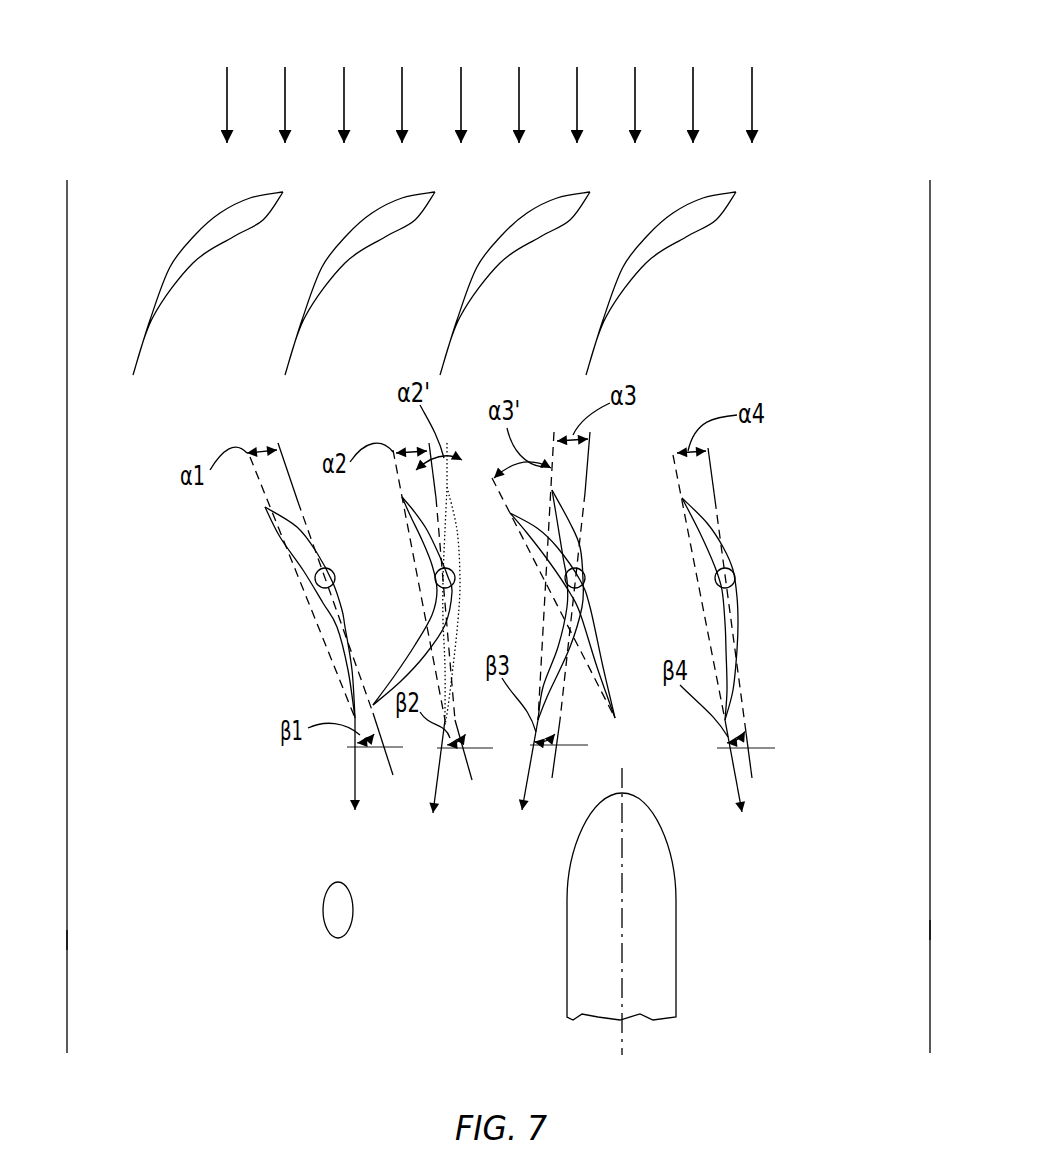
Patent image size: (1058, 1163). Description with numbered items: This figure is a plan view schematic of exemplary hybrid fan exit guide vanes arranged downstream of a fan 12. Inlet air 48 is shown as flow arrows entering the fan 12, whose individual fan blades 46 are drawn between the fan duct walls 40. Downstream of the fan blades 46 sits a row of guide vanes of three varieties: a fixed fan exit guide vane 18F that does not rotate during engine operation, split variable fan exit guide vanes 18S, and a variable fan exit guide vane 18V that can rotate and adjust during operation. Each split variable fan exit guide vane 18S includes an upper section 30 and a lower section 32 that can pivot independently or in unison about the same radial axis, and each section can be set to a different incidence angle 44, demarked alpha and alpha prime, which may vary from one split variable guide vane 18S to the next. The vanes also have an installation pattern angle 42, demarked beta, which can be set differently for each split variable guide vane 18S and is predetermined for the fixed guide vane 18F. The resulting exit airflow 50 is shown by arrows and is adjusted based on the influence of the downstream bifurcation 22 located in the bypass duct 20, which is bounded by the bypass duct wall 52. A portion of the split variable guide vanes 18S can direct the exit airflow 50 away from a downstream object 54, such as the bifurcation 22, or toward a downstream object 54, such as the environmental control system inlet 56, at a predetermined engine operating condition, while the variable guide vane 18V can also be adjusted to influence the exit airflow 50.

The fan 12 is at (737, 233).
The fixed fan exit guide vane 18F is at (345, 606).
The split variable fan exit guide vane 18S is at (460, 610).
The variable fan exit guide vane 18V is at (740, 602).
The bypass duct 20 is at (403, 993).
The upper bifurcation 22 is at (565, 963).
The upper section 30 is at (452, 513).
The lower section 32 is at (412, 518).
The fan duct wall 40 is at (67, 197).
The installation pattern angle 42 is at (387, 782).
The incidence angle 44 is at (228, 428).
The fan blade 46 is at (233, 240).
The inlet air 48 is at (403, 90).
The exit airflow 50 is at (352, 777).
The bypass duct wall 52 is at (67, 938).
The downstream object 54 is at (337, 953).
The environmental control system inlet 56 is at (323, 907).